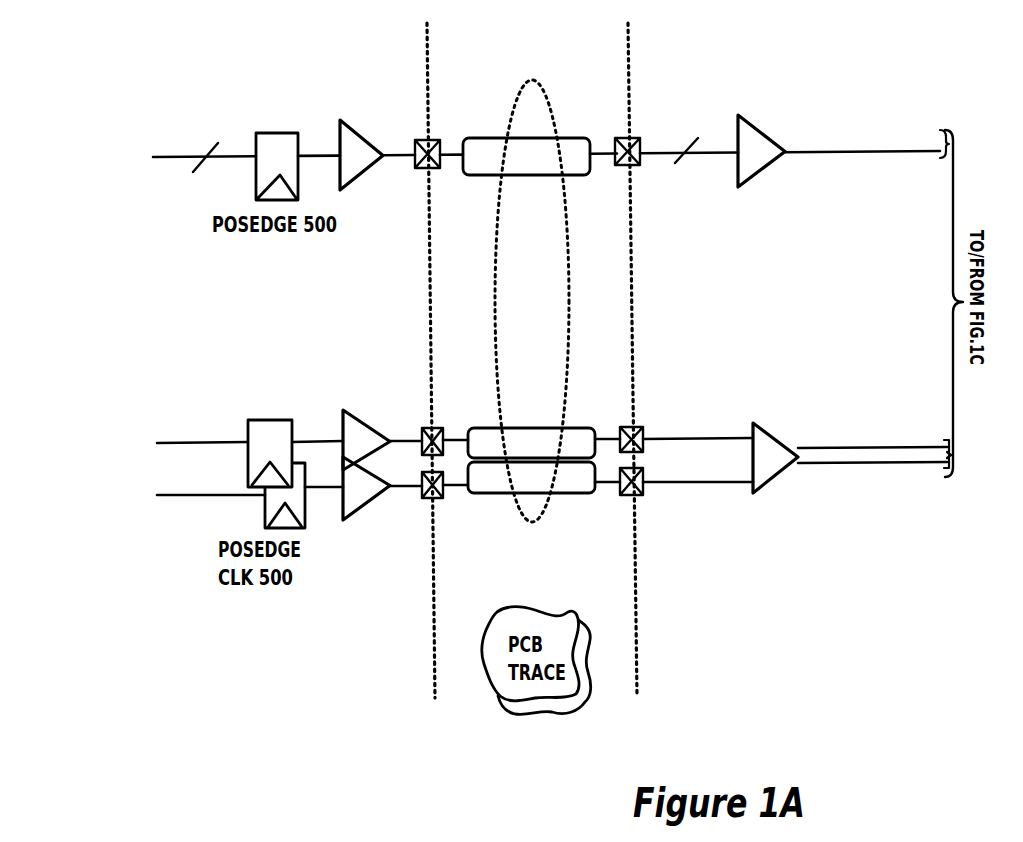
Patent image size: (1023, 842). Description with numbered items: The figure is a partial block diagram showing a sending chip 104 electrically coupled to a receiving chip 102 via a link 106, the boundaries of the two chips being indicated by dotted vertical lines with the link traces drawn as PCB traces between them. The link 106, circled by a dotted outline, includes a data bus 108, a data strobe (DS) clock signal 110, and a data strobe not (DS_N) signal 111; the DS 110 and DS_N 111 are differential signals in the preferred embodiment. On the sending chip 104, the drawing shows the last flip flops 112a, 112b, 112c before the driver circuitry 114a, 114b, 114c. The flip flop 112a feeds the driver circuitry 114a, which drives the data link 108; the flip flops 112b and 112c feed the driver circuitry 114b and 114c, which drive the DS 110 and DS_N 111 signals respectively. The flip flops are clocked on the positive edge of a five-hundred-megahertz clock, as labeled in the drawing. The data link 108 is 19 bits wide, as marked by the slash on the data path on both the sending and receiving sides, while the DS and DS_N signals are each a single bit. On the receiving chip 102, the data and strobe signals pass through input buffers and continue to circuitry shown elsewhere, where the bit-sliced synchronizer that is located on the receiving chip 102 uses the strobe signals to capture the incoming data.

The bit width of data link 19 is at (449, 142).
The receiving chip 102 is at (805, 722).
The sending chip 104 is at (262, 732).
The link 106 is at (543, 92).
The data bus 108 is at (555, 170).
The data strobe (DS) clock signal 110 is at (583, 442).
The data strobe not (DS_N) signal 111 is at (577, 483).
The flip flop 112a is at (283, 133).
The flip flop 112b is at (262, 420).
The flip flop 112c is at (260, 508).
The driver circuitry 114a is at (360, 177).
The driver circuitry 114b is at (368, 418).
The driver circuitry 114c is at (360, 508).